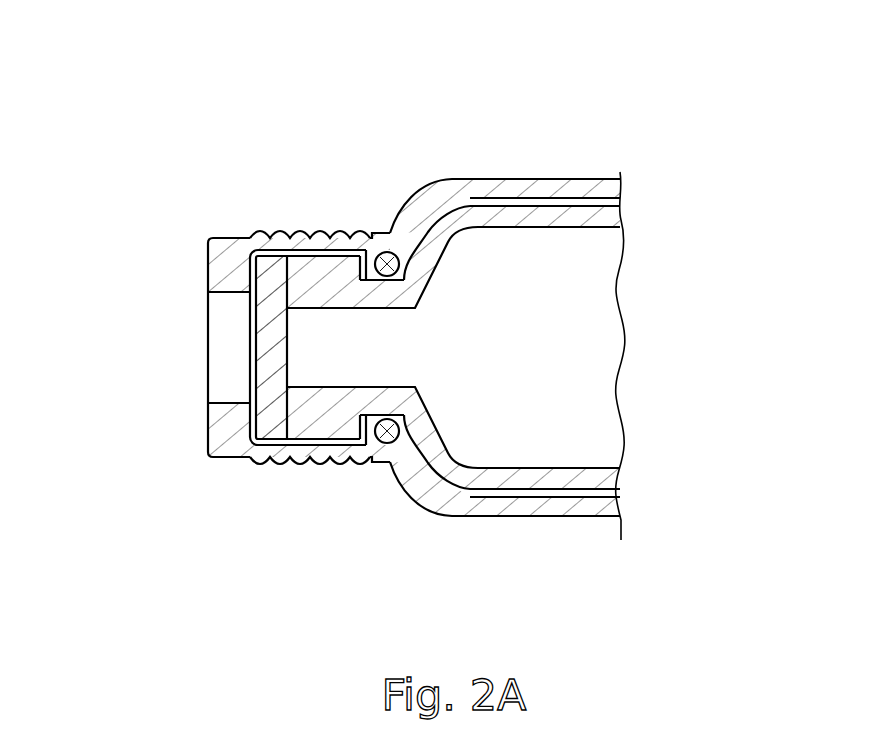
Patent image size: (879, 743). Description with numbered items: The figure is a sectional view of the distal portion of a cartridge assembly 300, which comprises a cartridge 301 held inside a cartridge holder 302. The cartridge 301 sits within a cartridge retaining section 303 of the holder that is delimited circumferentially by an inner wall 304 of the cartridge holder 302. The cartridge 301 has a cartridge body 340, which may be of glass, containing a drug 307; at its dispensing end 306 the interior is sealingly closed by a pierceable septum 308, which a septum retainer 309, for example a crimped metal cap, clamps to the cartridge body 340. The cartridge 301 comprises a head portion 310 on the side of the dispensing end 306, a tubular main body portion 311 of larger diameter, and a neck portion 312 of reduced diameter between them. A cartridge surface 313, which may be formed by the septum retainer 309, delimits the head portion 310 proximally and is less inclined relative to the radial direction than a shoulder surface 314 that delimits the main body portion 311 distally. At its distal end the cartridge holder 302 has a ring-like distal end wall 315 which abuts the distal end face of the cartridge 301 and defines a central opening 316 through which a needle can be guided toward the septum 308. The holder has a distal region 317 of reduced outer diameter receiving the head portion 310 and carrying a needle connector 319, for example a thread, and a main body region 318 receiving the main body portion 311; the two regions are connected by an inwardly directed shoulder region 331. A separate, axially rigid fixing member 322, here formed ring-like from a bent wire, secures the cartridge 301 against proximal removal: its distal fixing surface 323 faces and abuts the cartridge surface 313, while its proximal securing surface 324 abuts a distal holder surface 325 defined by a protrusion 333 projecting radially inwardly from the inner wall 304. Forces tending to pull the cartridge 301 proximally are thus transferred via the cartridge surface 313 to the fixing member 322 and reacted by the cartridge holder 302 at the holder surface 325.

The cartridge assembly 300 is at (371, 118).
The cartridge 301 is at (608, 214).
The cartridge holder 302 is at (613, 190).
The cartridge retaining section 303 is at (483, 192).
The inner wall 304 is at (465, 205).
The dispensing end 306 is at (248, 362).
The drug 307 is at (600, 387).
The septum 308 is at (249, 463).
The septum retainer 309 is at (243, 244).
The head portion 310 is at (307, 444).
The main body portion 311 is at (567, 482).
The neck portion 312 is at (351, 440).
The cartridge surface 313 is at (364, 246).
The shoulder surface 314 is at (440, 232).
The distal end wall 315 is at (223, 262).
The opening 316 is at (222, 332).
The distal region 317 is at (243, 248).
The main body region 318 is at (557, 190).
The needle connector 319 is at (315, 236).
The fixing member 322 is at (395, 281).
The fixing surface 323 is at (372, 240).
The securing surface 324 is at (404, 252).
The holder surface 325 is at (404, 248).
The shoulder region 331 is at (390, 450).
The protrusion 333 is at (390, 472).
The cartridge body 340 is at (608, 482).